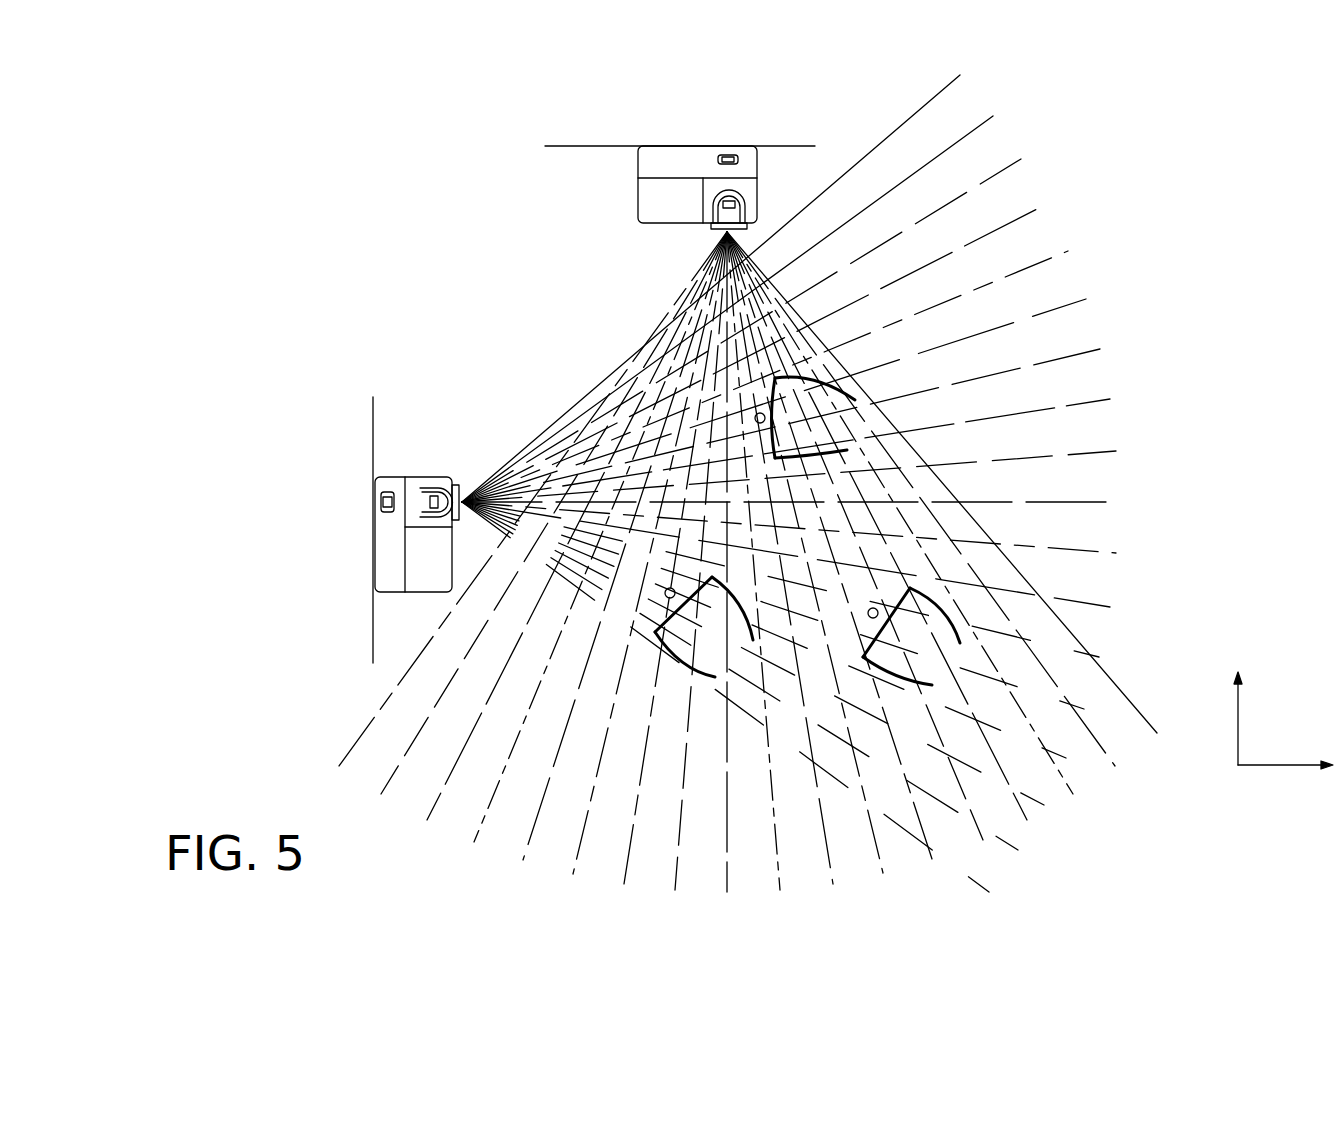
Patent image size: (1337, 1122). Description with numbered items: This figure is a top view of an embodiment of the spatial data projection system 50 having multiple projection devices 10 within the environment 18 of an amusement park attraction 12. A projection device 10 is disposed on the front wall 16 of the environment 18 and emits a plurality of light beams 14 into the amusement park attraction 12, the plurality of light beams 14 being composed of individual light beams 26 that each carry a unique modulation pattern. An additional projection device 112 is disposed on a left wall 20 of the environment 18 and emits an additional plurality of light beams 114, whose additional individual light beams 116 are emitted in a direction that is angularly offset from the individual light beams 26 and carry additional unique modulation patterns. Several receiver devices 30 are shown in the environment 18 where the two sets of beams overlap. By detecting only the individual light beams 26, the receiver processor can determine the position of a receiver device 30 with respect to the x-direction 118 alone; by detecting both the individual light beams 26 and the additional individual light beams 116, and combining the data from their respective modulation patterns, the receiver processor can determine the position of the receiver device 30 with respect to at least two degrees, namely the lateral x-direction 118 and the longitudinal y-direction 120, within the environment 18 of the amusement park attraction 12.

The projection device 10 is at (663, 157).
The amusement park attraction 12 is at (1090, 142).
The plurality of light beams 14 is at (680, 269).
The front wall 16 is at (786, 146).
The environment 18 is at (412, 336).
The left wall 20 is at (373, 438).
The individual light beams 26 is at (387, 747).
The receiver device 30 is at (807, 380).
The spatial data projection system 50 is at (477, 209).
The additional projection device 112 is at (392, 573).
The additional plurality of light beams 114 is at (493, 451).
The additional individual light beams 116 is at (864, 182).
The x-direction 118 is at (1280, 767).
The y-direction 120 is at (1238, 725).